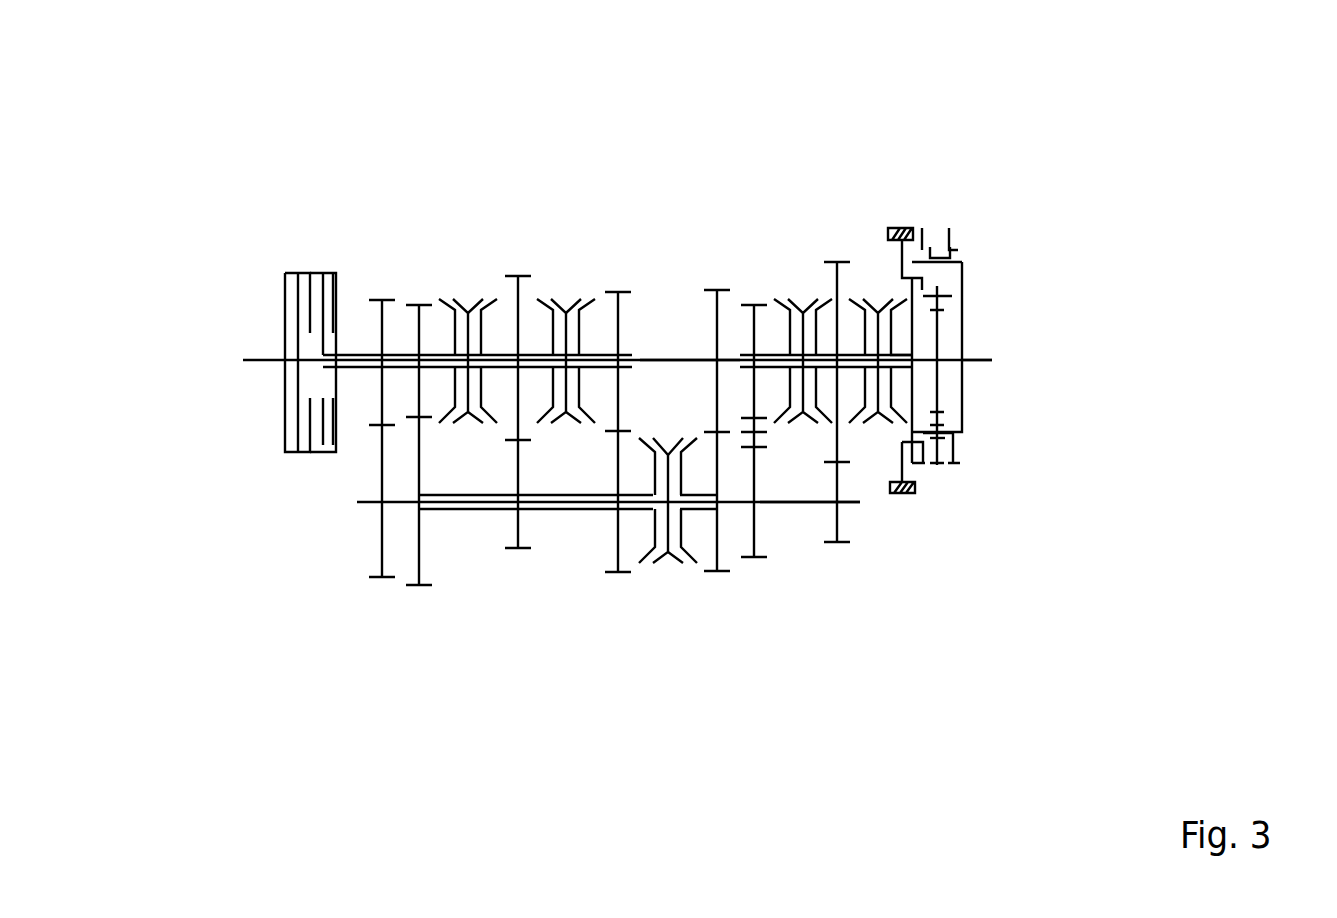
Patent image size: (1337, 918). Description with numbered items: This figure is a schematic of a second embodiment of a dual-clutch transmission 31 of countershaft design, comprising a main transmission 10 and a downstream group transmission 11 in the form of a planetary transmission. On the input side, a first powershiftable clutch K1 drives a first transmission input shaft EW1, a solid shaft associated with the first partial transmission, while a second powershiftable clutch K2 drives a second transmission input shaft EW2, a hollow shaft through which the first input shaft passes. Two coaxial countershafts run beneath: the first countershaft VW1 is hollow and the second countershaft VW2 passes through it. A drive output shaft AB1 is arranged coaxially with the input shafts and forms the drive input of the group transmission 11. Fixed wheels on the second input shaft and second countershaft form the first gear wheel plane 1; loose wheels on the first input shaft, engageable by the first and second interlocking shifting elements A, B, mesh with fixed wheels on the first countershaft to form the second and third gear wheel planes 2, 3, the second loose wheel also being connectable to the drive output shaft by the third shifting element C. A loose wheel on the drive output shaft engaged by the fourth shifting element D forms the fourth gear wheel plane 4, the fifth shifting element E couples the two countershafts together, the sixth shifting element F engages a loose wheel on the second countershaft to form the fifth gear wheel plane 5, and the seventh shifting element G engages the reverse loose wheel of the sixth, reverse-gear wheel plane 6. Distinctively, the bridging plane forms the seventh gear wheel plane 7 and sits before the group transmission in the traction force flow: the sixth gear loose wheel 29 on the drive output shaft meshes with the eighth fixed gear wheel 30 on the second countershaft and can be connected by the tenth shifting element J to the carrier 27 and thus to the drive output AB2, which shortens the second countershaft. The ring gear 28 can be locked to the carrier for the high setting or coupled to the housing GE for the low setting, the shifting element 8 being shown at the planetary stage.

The first powershiftable clutch K1 is at (288, 262).
The second powershiftable clutch K2 is at (320, 263).
The first transmission input shaft EW1 is at (394, 357).
The second transmission input shaft EW2 is at (357, 372).
The main transmission 10 is at (552, 212).
The drive output shaft AB1 is at (670, 356).
The drive output AB2 is at (985, 356).
The carrier 27 is at (898, 352).
The housing GE is at (900, 228).
The group transmission 11 is at (980, 200).
The first gear wheel plane 1 is at (380, 294).
The second gear wheel plane 2 is at (418, 299).
The third gear wheel plane 3 is at (518, 270).
The fourth gear wheel plane 4 is at (617, 286).
The fifth gear wheel plane 5 is at (716, 284).
The sixth, reverse-gear wheel plane 6 is at (753, 299).
The seventh gear wheel plane 7 is at (836, 256).
The eighth shift element / brake 8 is at (936, 224).
The ring gear 28 is at (940, 447).
The sixth gear loose wheel 29 is at (837, 442).
The eighth fixed gear wheel 30 is at (837, 522).
The transmission 31 is at (315, 588).
The first countershaft VW1 is at (470, 510).
The second countershaft VW2 is at (790, 510).
The first interlocking shifting element A is at (452, 343).
The second interlocking shifting element B is at (482, 343).
The third interlocking shifting element C is at (551, 343).
The fourth interlocking shifting element D is at (580, 343).
The fifth interlocking shifting element E is at (653, 517).
The sixth interlocking shifting element F is at (682, 517).
The seventh interlocking shifting element G is at (803, 342).
The tenth interlocking shifting element J is at (878, 342).